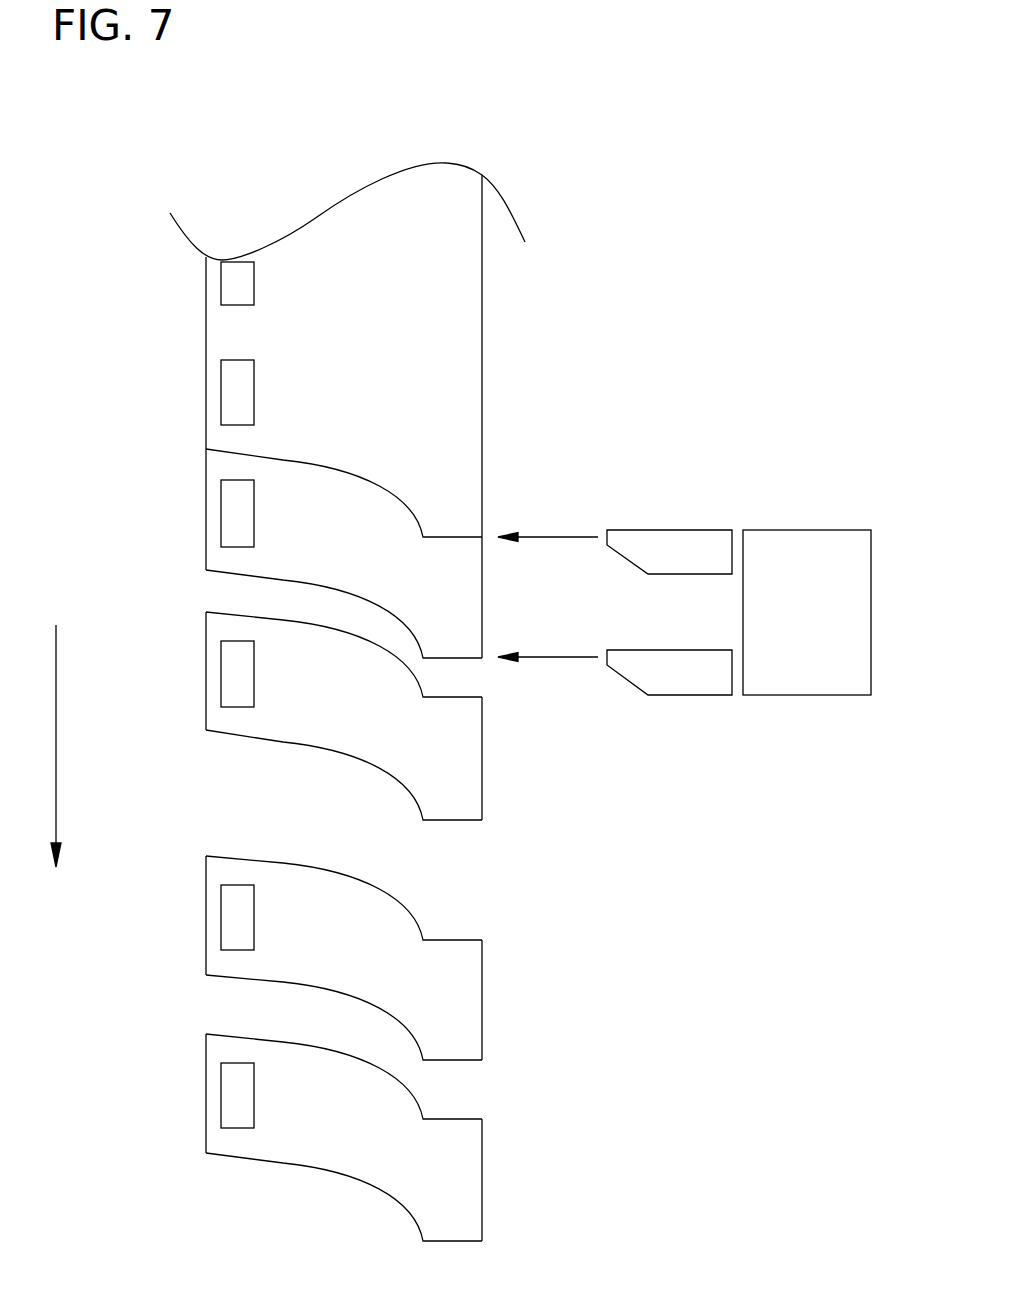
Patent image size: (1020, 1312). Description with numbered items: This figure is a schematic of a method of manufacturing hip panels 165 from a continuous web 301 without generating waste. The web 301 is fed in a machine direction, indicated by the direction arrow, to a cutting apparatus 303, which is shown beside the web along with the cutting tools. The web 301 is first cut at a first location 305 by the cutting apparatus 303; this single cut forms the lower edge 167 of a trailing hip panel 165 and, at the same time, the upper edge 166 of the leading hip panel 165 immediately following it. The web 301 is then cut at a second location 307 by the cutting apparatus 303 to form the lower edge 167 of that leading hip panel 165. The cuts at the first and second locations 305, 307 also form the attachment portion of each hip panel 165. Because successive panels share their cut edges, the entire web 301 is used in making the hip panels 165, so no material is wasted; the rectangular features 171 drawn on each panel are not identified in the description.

The hip panel 165 is at (186, 504).
The upper edge 166 is at (308, 462).
The lower edge 167 is at (267, 580).
The slot 171 is at (208, 280).
The web 301 is at (206, 312).
The cutting apparatus 303 is at (772, 530).
The first location 305 is at (663, 530).
The second location 307 is at (670, 650).